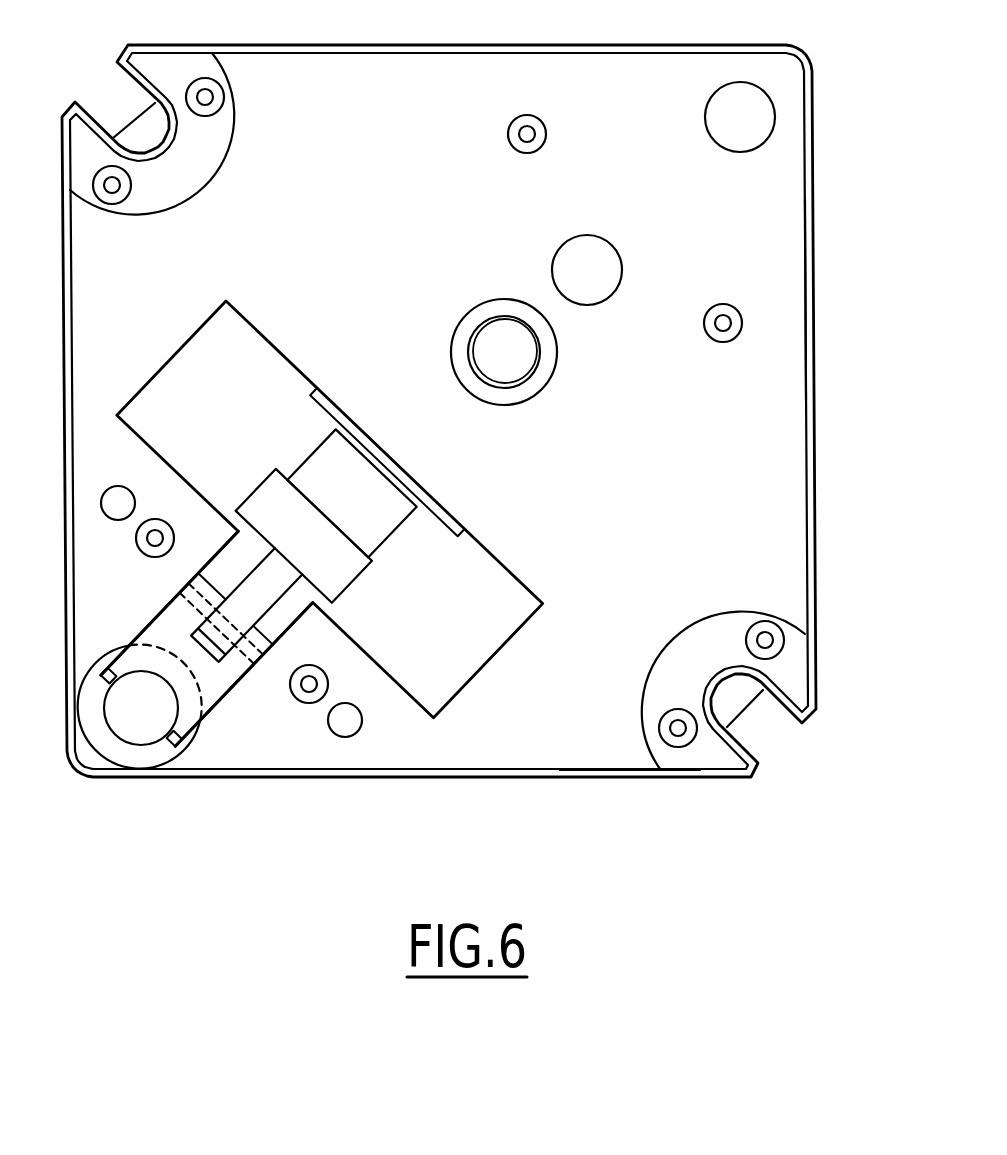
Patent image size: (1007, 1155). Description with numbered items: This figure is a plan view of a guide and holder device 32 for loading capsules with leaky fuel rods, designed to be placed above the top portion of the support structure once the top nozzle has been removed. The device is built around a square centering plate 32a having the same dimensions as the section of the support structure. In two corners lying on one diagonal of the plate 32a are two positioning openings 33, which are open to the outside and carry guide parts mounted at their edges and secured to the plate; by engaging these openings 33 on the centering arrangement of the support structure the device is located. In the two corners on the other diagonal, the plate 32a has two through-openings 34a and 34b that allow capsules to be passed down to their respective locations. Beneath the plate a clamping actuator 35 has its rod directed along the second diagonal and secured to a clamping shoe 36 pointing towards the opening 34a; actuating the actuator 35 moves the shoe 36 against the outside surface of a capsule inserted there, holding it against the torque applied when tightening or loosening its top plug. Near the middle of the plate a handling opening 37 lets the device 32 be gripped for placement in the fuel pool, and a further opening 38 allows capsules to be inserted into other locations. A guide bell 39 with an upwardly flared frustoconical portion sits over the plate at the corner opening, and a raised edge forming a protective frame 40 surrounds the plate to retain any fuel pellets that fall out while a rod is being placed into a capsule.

The guide and holder device 32 is at (194, 823).
The centering plate 32a is at (567, 740).
The positioning openings 33 is at (121, 108).
The opening 34a is at (140, 708).
The opening 34b is at (740, 117).
The clamping actuator 35 is at (352, 487).
The clamping shoe 36 is at (172, 637).
The handling opening 37 is at (503, 353).
The opening 38 is at (182, 377).
The guide bell 39 is at (130, 755).
The protective frame 40 is at (812, 292).